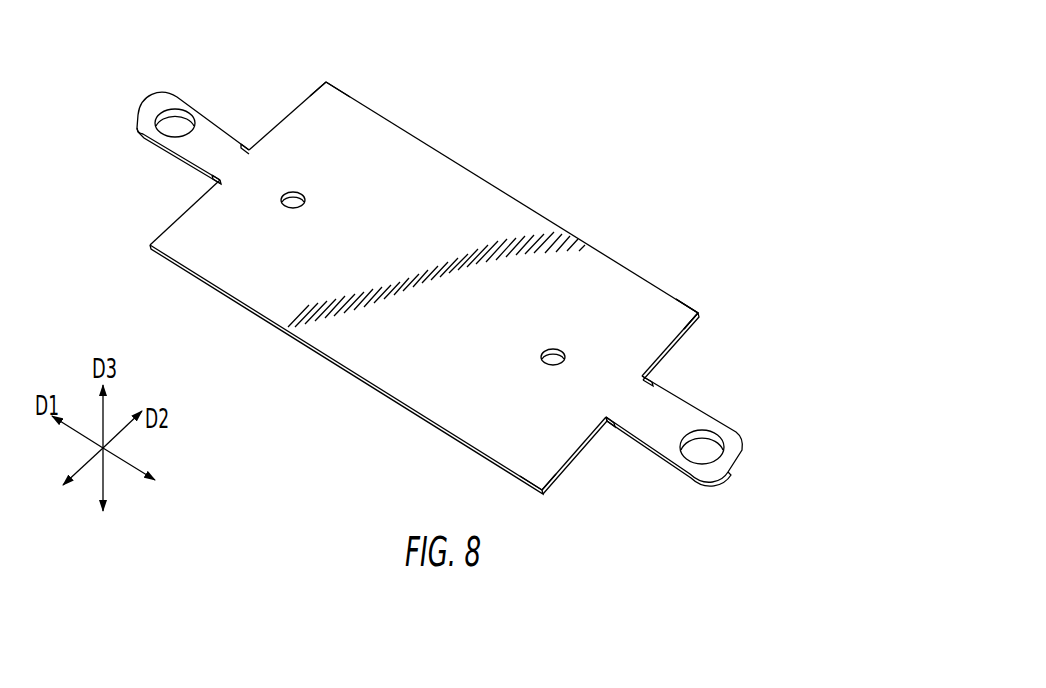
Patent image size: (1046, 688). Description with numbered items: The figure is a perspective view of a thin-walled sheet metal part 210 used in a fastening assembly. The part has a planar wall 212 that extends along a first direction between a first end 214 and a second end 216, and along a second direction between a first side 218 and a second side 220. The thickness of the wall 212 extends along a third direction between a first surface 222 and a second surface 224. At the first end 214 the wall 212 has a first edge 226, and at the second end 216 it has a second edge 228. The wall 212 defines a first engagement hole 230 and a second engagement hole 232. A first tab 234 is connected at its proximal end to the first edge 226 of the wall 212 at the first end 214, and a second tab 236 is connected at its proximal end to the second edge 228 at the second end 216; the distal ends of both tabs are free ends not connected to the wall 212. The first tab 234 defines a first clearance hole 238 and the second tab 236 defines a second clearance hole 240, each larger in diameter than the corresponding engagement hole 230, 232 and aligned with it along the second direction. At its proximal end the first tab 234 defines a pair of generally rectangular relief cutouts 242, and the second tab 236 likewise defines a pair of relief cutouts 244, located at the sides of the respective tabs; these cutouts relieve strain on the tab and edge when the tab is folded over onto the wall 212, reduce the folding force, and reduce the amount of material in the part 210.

The thin-walled sheet metal part 210 is at (577, 140).
The wall 212 is at (432, 180).
The first end 214 is at (337, 56).
The second end 216 is at (708, 293).
The first side 218 is at (558, 497).
The second side 220 is at (712, 317).
The first surface 222 is at (622, 303).
The second surface 224 is at (362, 386).
The first edge 226 is at (163, 225).
The second edge 228 is at (572, 460).
The first engagement hole 230 is at (296, 188).
The second engagement hole 232 is at (549, 346).
The first tab 234 is at (217, 112).
The second tab 236 is at (738, 434).
The first clearance hole 238 is at (158, 117).
The second clearance hole 240 is at (707, 443).
The relief cutouts 242 is at (256, 141).
The relief cutouts 244 is at (603, 430).